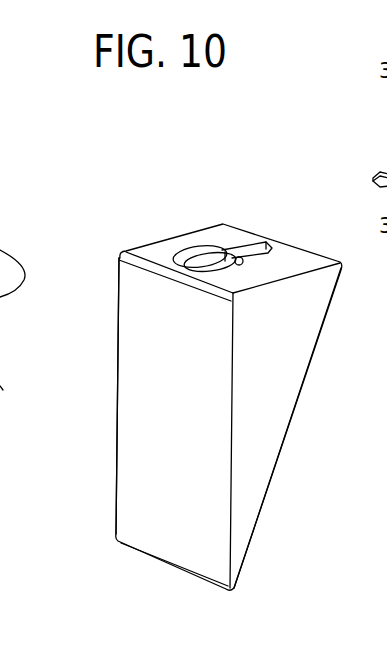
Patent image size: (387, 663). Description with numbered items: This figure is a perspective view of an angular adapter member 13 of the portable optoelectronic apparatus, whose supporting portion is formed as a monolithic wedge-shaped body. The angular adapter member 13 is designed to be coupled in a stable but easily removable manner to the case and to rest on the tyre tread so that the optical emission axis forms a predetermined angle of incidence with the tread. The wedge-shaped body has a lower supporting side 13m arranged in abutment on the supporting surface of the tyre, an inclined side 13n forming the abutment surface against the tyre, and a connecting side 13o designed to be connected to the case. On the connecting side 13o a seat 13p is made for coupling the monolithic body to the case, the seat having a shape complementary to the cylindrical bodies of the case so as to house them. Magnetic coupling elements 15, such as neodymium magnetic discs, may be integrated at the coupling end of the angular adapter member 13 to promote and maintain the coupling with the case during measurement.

The angular adapter member 13 is at (255, 220).
The lower supporting side 13m is at (150, 411).
The inclined side 13n is at (291, 428).
The connecting side 13o is at (280, 263).
The seat 13p is at (193, 252).
The magnetic coupling elements 15 is at (252, 246).